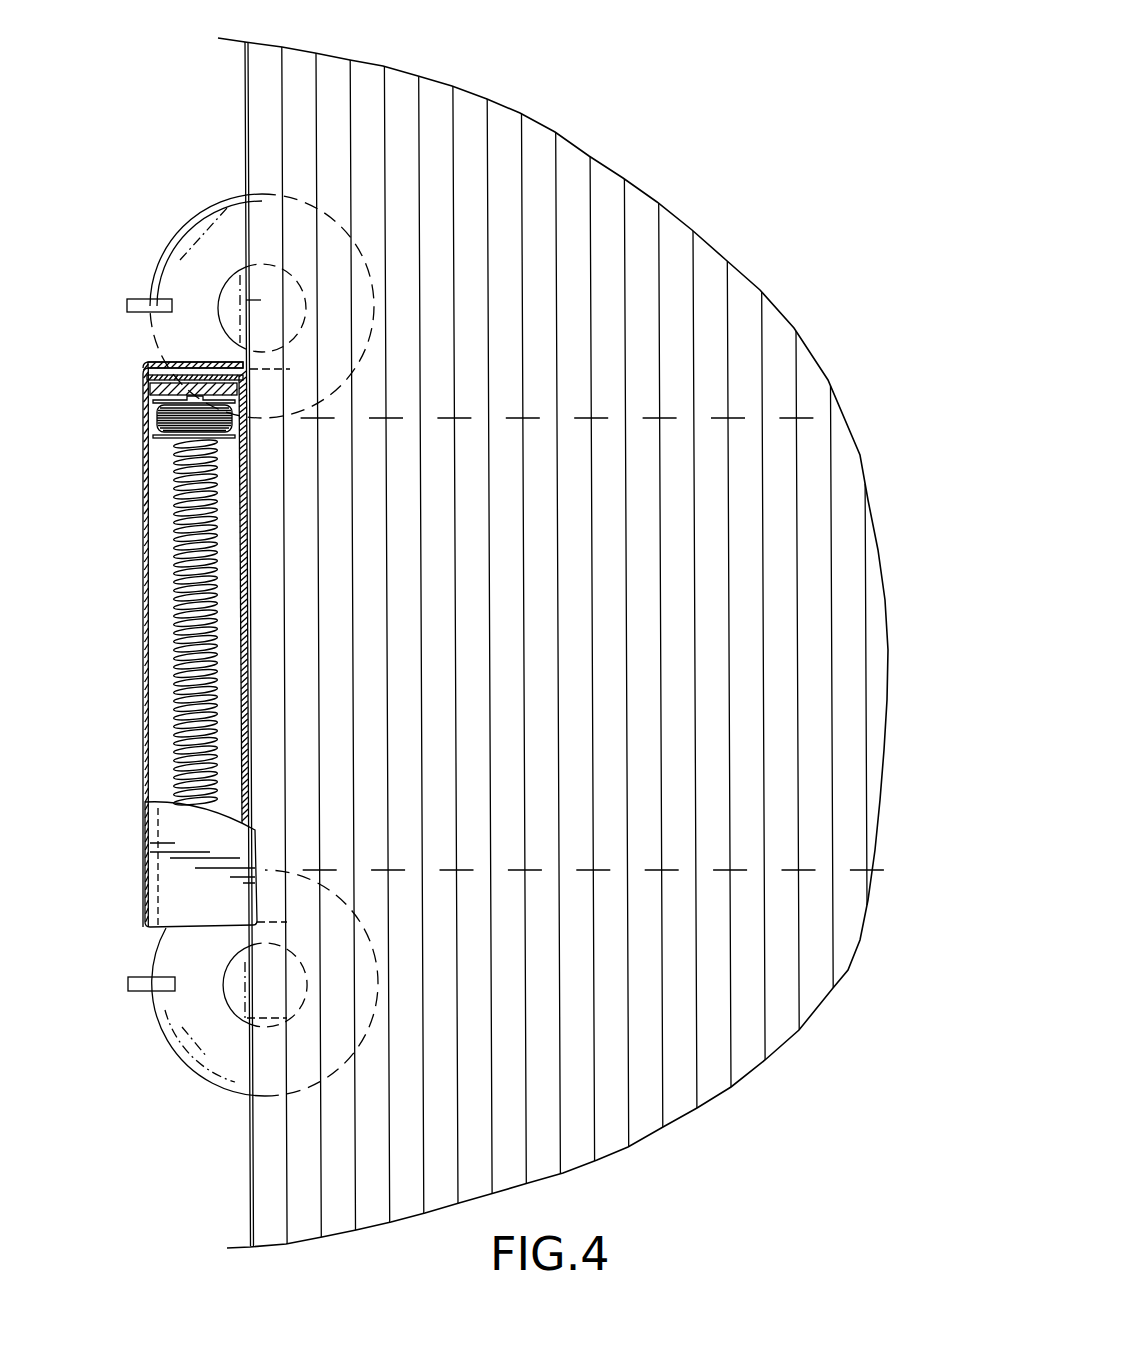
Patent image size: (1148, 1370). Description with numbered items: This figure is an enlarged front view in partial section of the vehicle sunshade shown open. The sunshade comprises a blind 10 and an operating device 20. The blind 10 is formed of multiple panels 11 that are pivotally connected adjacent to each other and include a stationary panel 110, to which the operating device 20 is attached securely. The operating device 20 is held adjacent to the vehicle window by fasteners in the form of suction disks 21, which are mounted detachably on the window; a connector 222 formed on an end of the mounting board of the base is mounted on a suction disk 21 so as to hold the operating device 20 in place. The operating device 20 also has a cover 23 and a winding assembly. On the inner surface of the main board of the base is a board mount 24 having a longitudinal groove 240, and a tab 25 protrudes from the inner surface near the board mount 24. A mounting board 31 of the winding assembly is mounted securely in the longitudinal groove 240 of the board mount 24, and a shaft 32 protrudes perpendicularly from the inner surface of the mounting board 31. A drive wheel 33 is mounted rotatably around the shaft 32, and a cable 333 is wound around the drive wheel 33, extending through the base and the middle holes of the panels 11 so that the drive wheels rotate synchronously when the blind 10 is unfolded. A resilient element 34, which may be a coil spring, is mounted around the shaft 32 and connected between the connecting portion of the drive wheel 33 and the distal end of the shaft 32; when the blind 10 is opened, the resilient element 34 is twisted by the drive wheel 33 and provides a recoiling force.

The blind 10 is at (377, 54).
The panels 11 is at (468, 123).
The stationary panel 110 is at (244, 120).
The operating device 20 is at (131, 659).
The suction disks 21 is at (219, 228).
The connector 222 is at (253, 300).
The cover 23 is at (146, 723).
The board mount 24 is at (235, 398).
The longitudinal groove 240 is at (227, 392).
The tab 25 is at (173, 478).
The mounting board 31 is at (158, 392).
The shaft 32 is at (178, 573).
The drive wheel 33 is at (157, 437).
The cable 333 is at (160, 417).
The resilient element 34 is at (176, 521).